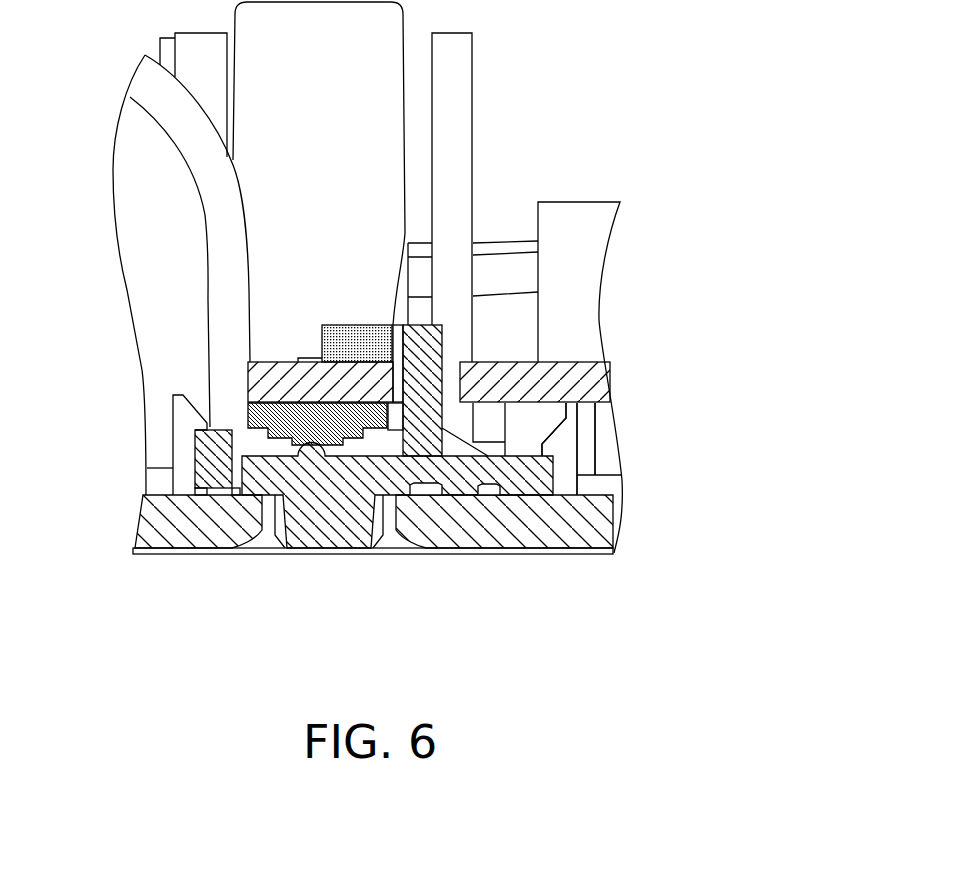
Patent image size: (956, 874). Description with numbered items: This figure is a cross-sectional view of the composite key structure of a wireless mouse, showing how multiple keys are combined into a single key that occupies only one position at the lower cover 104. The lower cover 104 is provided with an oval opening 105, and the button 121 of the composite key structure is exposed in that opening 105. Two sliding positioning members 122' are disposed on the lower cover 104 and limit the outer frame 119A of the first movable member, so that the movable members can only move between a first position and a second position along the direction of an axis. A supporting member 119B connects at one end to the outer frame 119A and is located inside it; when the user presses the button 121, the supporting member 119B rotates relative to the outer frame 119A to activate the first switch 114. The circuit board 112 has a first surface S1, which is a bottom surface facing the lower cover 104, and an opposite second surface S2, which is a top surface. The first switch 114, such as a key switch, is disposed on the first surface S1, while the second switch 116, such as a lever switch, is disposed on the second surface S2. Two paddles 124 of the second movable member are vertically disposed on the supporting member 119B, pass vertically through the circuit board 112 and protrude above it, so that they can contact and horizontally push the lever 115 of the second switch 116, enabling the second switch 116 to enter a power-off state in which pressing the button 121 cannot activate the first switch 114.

The lower cover 104 is at (220, 530).
The opening 105 is at (394, 560).
The circuit board 112 is at (552, 377).
The first switch 114 is at (319, 430).
The lever 115 is at (398, 337).
The second switch 116 is at (357, 337).
The outer frame 119A is at (215, 480).
The supporting member 119B is at (462, 478).
The button 121 is at (332, 535).
The sliding positioning member 122' is at (378, 445).
The paddles 124 is at (427, 345).
The first surface S1 is at (491, 407).
The second surface S2 is at (506, 360).